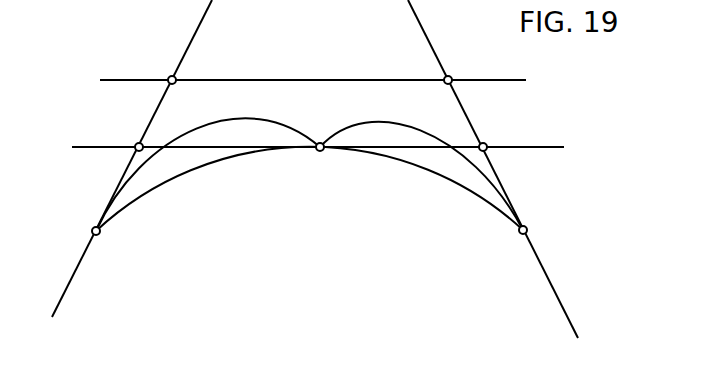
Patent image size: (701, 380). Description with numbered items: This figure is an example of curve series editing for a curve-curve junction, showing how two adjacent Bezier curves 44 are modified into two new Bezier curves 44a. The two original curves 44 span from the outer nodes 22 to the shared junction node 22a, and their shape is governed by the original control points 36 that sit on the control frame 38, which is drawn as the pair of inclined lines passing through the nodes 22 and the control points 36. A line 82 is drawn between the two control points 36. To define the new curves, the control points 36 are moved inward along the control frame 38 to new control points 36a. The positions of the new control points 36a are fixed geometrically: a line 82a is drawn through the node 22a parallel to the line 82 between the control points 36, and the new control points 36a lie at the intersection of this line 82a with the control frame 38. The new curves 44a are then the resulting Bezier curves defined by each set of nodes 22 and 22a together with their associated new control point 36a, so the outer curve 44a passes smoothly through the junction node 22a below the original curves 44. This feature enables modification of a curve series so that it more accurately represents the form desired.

The node 22 is at (92, 232).
The node 22a is at (320, 152).
The control point 36 is at (169, 76).
The new control point 36a is at (136, 145).
The control frame 38 is at (155, 113).
The Bezier curve 44 is at (337, 132).
The new Bezier curve 44a is at (201, 172).
The line 82 is at (274, 79).
The line 82a is at (212, 146).